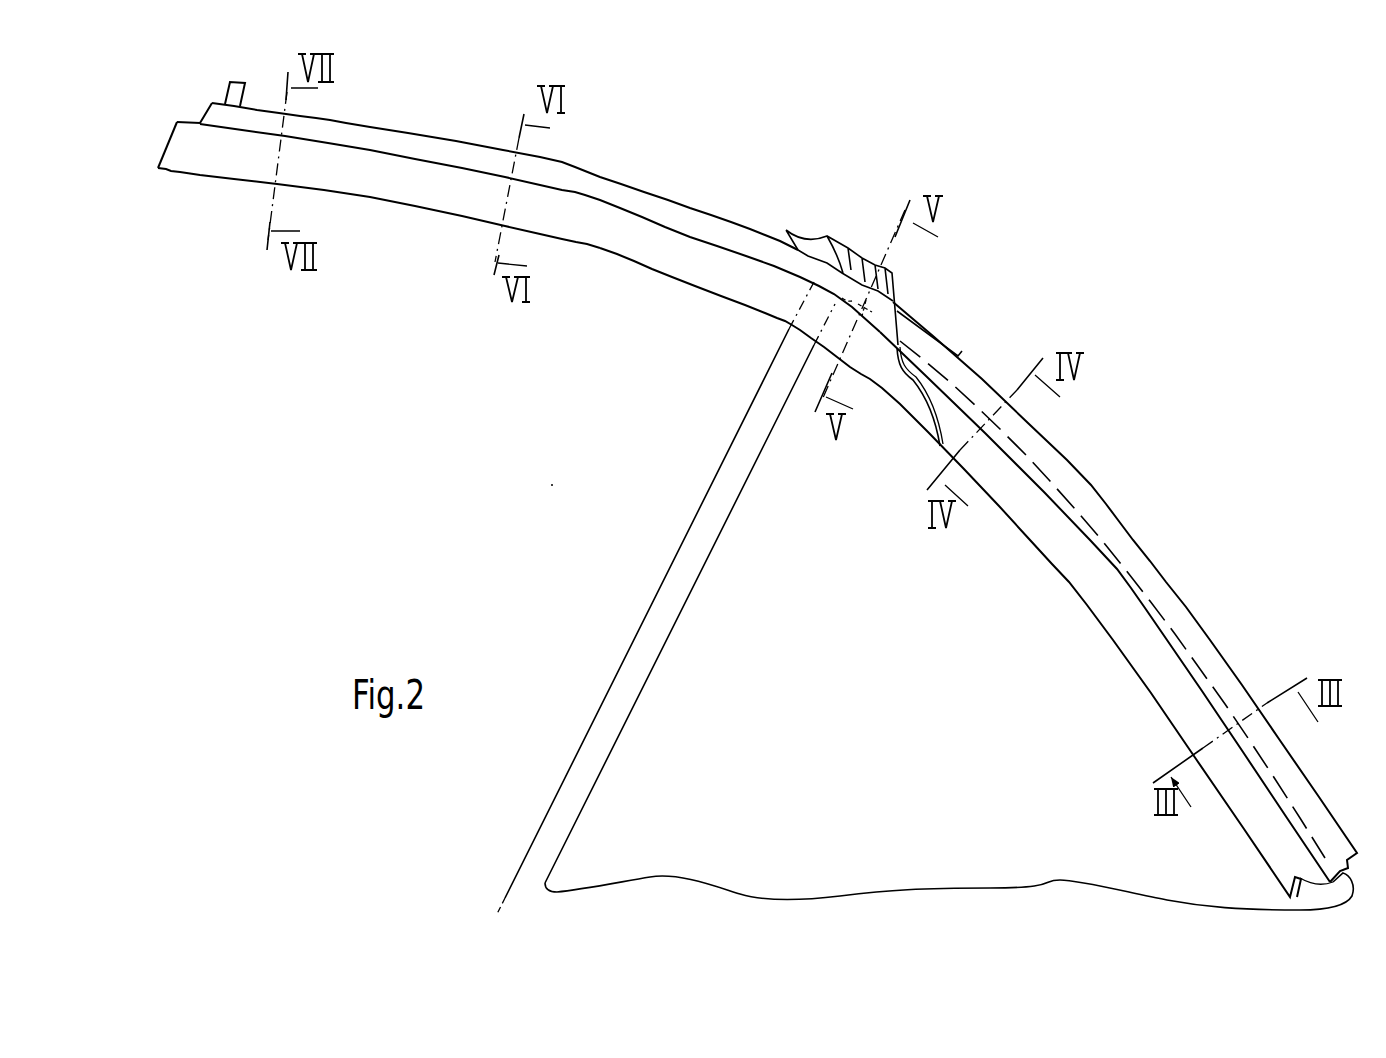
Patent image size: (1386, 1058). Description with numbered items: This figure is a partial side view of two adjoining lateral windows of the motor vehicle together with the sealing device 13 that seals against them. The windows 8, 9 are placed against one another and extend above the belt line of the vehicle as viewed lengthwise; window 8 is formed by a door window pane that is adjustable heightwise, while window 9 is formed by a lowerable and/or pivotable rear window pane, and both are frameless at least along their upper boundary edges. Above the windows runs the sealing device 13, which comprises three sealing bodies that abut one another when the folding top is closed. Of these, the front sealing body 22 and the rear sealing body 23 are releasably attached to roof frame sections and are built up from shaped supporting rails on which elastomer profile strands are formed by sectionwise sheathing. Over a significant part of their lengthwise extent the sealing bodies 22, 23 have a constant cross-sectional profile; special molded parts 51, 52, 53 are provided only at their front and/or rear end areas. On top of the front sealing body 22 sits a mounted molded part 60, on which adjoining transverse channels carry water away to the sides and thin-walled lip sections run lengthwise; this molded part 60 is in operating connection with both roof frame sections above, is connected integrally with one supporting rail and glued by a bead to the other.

The window 8 is at (522, 868).
The window 9 is at (962, 853).
The sealing device 13 is at (773, 338).
The sealing body 22 is at (672, 277).
The sealing body 23 is at (1120, 649).
The molded part 51 is at (223, 180).
The molded part 52 is at (900, 407).
The molded part 53 is at (1013, 522).
The molded part 60 is at (827, 229).